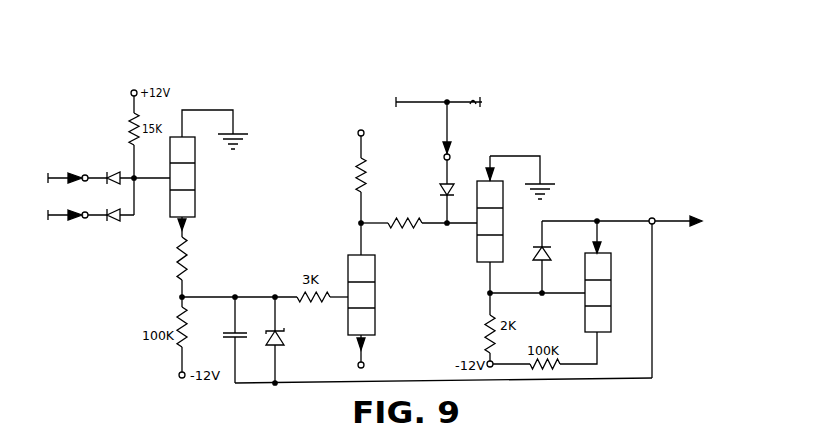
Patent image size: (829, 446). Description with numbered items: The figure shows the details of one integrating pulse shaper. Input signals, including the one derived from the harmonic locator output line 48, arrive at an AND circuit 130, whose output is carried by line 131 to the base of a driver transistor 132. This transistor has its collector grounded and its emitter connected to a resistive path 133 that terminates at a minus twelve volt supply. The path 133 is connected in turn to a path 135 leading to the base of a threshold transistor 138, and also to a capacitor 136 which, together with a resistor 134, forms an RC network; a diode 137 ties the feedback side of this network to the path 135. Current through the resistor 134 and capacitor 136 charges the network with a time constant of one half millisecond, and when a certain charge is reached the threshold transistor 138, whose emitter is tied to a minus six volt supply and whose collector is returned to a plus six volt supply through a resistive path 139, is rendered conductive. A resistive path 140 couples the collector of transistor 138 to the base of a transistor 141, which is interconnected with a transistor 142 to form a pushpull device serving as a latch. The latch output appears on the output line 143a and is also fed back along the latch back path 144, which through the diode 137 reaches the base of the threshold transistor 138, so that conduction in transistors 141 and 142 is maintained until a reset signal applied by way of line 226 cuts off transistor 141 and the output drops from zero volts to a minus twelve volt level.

The harmonic locator output line 48 is at (57, 176).
The AND circuit 130 is at (118, 150).
The line 131 is at (156, 176).
The driver transistor 132 is at (196, 186).
The resistive path 133 is at (178, 297).
The resistor 134 is at (188, 250).
The path 135 is at (250, 297).
The capacitor 136 is at (228, 335).
The diode 137 is at (283, 335).
The threshold transistor 138 is at (376, 303).
The resistive path 139 is at (359, 203).
The resistive path 140 is at (432, 217).
The transistor 141 is at (477, 250).
The transistor 142 is at (611, 305).
The output line 143a is at (605, 221).
The latch back path 144 is at (653, 343).
The reset line 226 is at (439, 154).